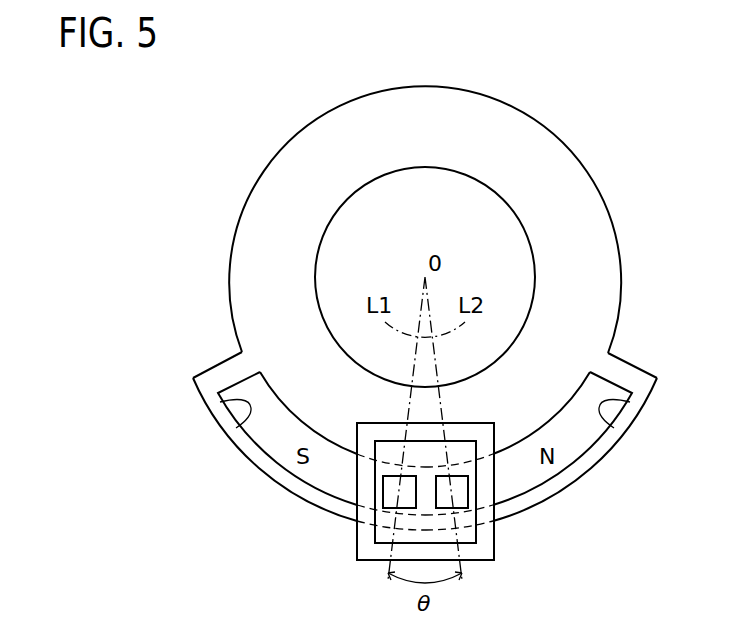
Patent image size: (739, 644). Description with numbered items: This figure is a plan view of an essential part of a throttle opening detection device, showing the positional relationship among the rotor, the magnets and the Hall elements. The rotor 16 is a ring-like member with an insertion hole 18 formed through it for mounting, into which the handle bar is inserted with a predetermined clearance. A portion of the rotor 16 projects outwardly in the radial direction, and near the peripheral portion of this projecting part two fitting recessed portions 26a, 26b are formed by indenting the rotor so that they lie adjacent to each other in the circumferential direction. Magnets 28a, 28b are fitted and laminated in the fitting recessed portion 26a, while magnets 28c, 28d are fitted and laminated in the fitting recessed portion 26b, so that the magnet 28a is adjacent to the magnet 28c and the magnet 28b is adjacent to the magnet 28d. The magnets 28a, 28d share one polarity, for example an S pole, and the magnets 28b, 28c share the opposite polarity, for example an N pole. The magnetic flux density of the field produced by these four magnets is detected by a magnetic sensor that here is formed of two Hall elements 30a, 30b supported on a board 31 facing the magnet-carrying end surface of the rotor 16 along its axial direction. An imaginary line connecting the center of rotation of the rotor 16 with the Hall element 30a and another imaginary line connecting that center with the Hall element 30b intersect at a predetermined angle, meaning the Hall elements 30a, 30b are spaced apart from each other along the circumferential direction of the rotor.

The rotor 16 is at (552, 140).
The insertion hole 18 is at (473, 184).
The fitting recessed portion 26a is at (236, 428).
The fitting recessed portion 26b is at (614, 428).
The magnet 28a is at (282, 425).
The magnet 28b is at (338, 485).
The magnet 28c is at (568, 427).
The magnet 28d is at (512, 485).
The Hall element 30a is at (400, 482).
The Hall element 30b is at (450, 482).
The board 31 is at (470, 535).